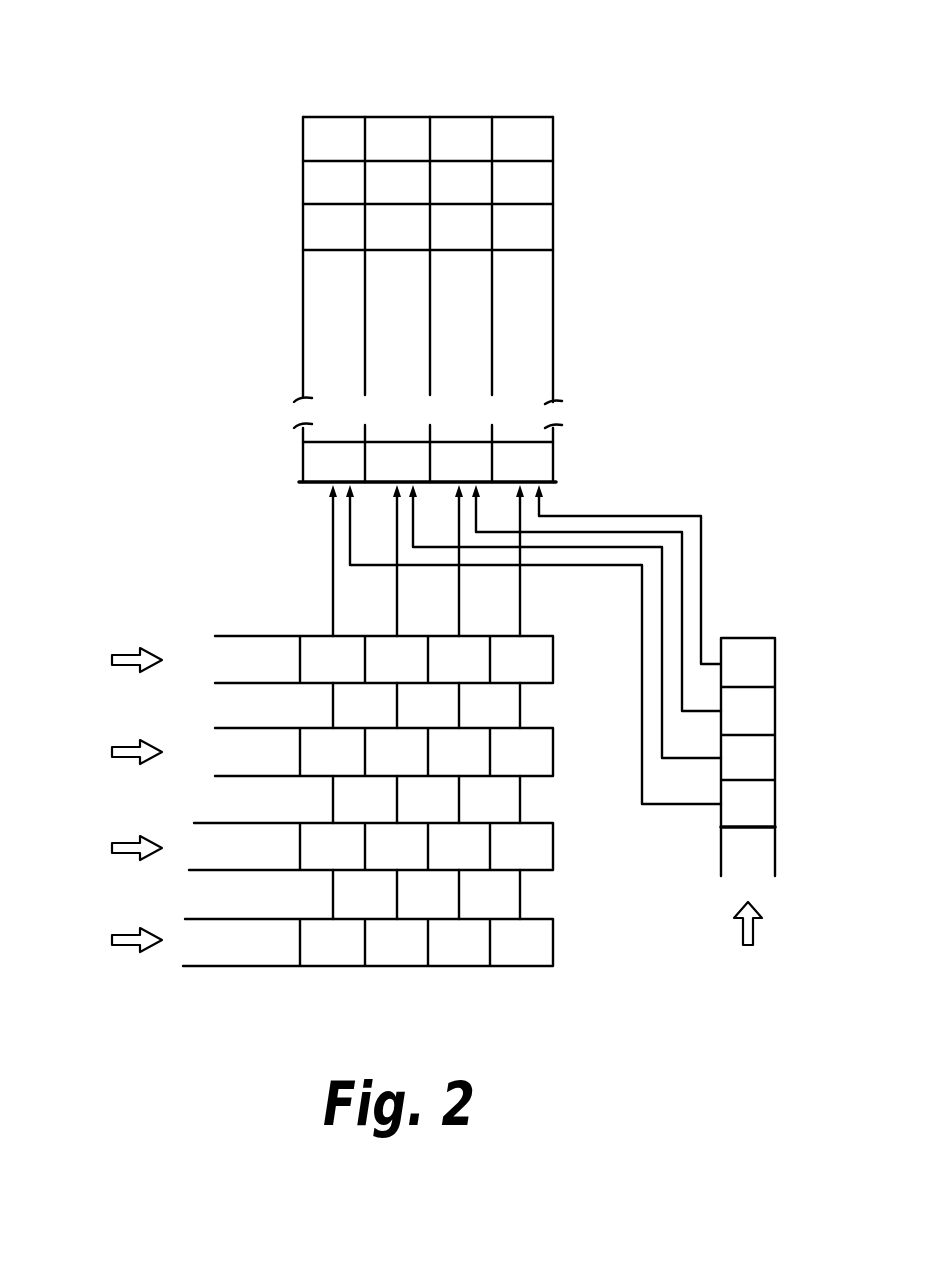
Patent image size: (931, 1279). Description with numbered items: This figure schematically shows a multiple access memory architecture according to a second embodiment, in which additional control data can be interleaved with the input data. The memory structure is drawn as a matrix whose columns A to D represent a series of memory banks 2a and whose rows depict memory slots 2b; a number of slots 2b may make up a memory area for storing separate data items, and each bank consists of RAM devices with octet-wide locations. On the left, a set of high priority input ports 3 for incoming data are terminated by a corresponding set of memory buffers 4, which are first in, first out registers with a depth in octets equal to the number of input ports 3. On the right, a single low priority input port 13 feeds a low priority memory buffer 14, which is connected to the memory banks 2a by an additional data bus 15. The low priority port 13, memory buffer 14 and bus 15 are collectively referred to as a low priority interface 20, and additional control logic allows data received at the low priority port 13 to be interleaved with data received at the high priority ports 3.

The memory bank 2a is at (461, 58).
The memory slot 2b is at (284, 146).
The input port 3 is at (128, 673).
The memory buffer 4 is at (555, 660).
The low priority input port 13 is at (735, 930).
The low priority memory buffer 14 is at (784, 808).
The additional data bus 15 is at (709, 568).
The low priority interface 20 is at (785, 632).